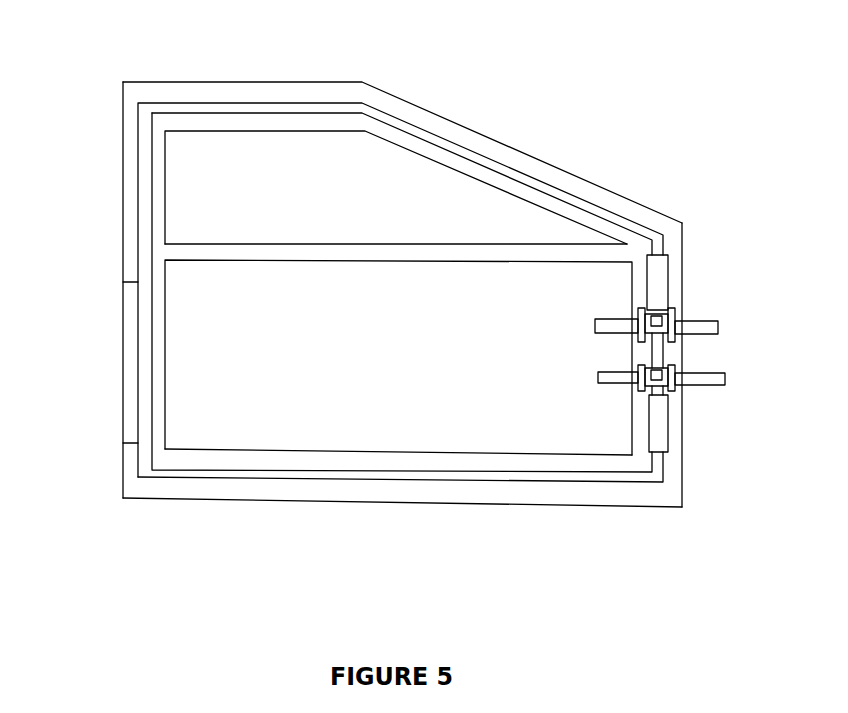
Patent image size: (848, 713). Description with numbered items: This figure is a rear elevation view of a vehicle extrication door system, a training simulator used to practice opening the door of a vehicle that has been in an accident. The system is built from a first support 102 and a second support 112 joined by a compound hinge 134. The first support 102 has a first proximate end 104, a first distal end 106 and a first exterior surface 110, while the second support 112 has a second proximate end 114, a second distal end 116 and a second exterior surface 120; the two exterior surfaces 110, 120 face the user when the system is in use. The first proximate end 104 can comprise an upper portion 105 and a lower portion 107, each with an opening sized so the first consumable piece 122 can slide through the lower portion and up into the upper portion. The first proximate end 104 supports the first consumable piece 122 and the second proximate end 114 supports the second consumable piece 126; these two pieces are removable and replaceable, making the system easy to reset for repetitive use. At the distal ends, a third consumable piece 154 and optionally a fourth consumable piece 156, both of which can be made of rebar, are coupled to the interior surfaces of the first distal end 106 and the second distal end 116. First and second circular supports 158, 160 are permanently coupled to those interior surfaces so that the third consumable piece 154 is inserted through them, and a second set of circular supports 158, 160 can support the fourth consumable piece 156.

The first support 102 is at (233, 123).
The first proximate end 104 is at (163, 175).
The upper portion 105 is at (163, 247).
The first distal end 106 is at (640, 288).
The lower portion 107 is at (165, 458).
The first exterior surface 110 is at (365, 460).
The second support 112 is at (202, 81).
The second proximate end 114 is at (133, 198).
The second distal end 116 is at (683, 302).
The second exterior surface 120 is at (417, 490).
The first consumable piece 122 is at (160, 383).
The second consumable piece 126 is at (130, 352).
The compound hinge 134 is at (663, 292).
The third consumable piece 154 is at (712, 323).
The fourth consumable piece 156 is at (677, 388).
The first circular support 158 is at (638, 334).
The second circular support 160 is at (683, 333).